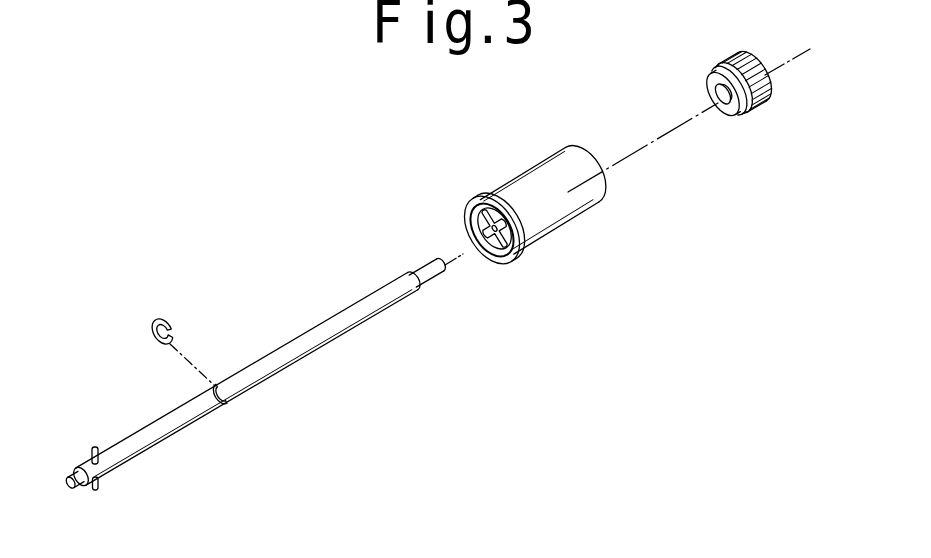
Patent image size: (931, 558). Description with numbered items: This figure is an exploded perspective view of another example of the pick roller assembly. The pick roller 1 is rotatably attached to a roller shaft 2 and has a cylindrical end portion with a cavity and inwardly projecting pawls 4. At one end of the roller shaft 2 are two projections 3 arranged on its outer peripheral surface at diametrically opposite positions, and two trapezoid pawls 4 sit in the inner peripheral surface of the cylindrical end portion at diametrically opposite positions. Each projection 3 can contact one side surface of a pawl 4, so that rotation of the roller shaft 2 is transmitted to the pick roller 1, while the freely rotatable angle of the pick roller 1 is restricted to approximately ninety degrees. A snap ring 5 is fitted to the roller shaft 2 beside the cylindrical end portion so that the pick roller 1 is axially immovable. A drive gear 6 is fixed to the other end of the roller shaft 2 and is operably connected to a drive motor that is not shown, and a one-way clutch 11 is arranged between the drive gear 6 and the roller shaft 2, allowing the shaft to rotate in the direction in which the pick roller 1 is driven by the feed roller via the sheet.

The pick roller 1 is at (582, 218).
The roller shaft 2 is at (292, 346).
The projection 3 is at (93, 449).
The pawl 4 is at (505, 208).
The snap ring 5 is at (160, 317).
The drive gear 6 is at (771, 100).
The one-way clutch 11 is at (727, 100).